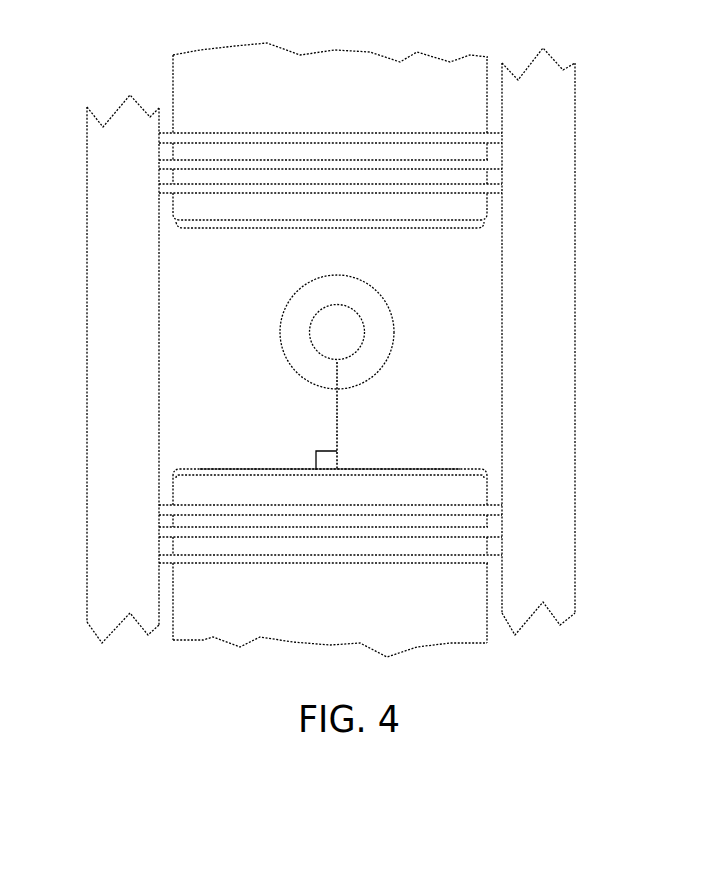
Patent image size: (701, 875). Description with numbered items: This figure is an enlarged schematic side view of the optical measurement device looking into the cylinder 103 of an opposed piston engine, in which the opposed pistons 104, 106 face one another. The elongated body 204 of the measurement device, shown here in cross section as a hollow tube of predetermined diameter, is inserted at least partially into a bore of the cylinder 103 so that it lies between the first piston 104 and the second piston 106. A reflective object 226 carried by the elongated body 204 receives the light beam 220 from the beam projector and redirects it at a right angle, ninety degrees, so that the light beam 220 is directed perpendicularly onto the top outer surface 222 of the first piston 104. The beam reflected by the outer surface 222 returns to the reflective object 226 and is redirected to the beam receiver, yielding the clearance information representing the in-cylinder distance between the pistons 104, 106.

The cylinder 103 is at (88, 513).
The first piston 104 is at (233, 642).
The second piston 106 is at (173, 91).
The elongated body 204 is at (299, 375).
The light beam 220 is at (338, 432).
The outer surface 222 is at (402, 470).
The reflective object 226 is at (362, 347).